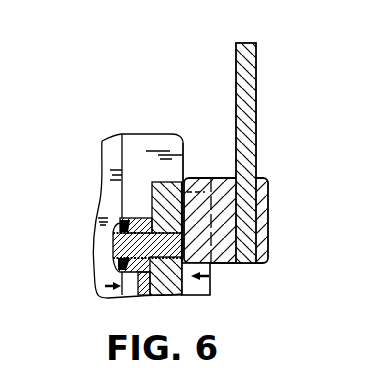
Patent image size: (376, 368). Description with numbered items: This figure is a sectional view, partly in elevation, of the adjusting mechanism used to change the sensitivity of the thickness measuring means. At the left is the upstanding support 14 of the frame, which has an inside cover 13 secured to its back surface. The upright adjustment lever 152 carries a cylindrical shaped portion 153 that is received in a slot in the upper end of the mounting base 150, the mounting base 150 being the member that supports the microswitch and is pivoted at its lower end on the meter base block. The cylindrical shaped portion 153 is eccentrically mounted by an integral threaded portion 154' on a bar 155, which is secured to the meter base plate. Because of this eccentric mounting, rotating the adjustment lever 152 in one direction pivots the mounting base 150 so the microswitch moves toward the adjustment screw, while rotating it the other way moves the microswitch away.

The inside cover 13 is at (113, 147).
The upstanding support 14 is at (148, 138).
The mounting base 150 is at (211, 284).
The adjustment lever 152 is at (257, 75).
The cylindrical shaped portion 153 is at (268, 205).
The integral threaded portion 154' is at (112, 245).
The bar 155 is at (175, 294).